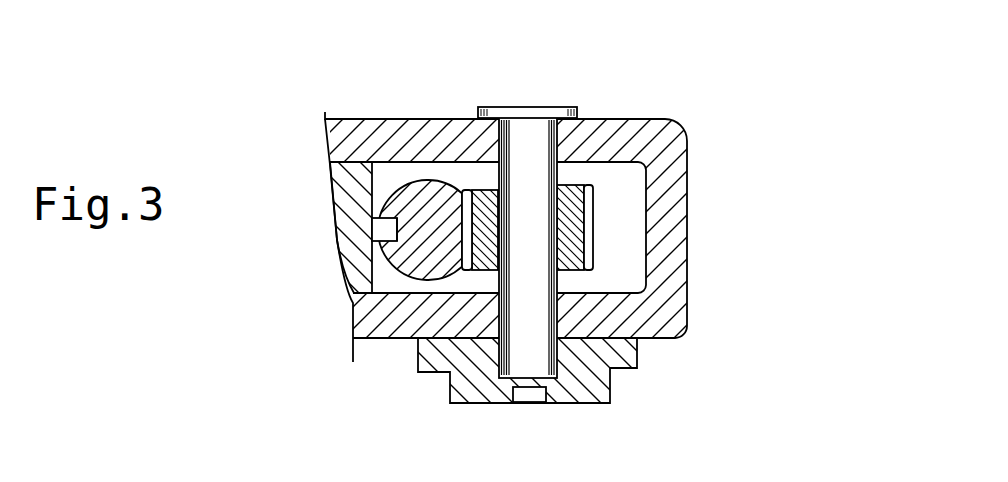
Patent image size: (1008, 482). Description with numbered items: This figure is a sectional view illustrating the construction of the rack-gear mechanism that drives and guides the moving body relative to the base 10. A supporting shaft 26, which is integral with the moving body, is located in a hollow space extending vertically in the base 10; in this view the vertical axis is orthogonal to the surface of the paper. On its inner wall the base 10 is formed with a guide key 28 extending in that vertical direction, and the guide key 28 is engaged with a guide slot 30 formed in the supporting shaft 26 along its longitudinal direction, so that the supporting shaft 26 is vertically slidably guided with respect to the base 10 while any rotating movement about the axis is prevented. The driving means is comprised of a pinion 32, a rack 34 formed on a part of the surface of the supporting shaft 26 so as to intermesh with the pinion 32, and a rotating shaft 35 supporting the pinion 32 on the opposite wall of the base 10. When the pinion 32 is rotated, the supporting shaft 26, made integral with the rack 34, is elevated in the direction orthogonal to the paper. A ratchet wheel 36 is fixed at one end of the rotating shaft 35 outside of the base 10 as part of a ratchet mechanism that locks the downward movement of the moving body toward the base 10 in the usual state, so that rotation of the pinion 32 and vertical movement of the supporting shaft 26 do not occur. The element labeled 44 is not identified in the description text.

The base 10 is at (675, 182).
The supporting shaft 26 is at (417, 207).
The guide key 28 is at (376, 236).
The guide slot 30 is at (383, 232).
The pinion 32 is at (567, 180).
The rack 34 is at (462, 197).
The rotating shaft 35 is at (533, 293).
The ratchet wheel 36 is at (597, 383).
The nut 44 is at (518, 403).